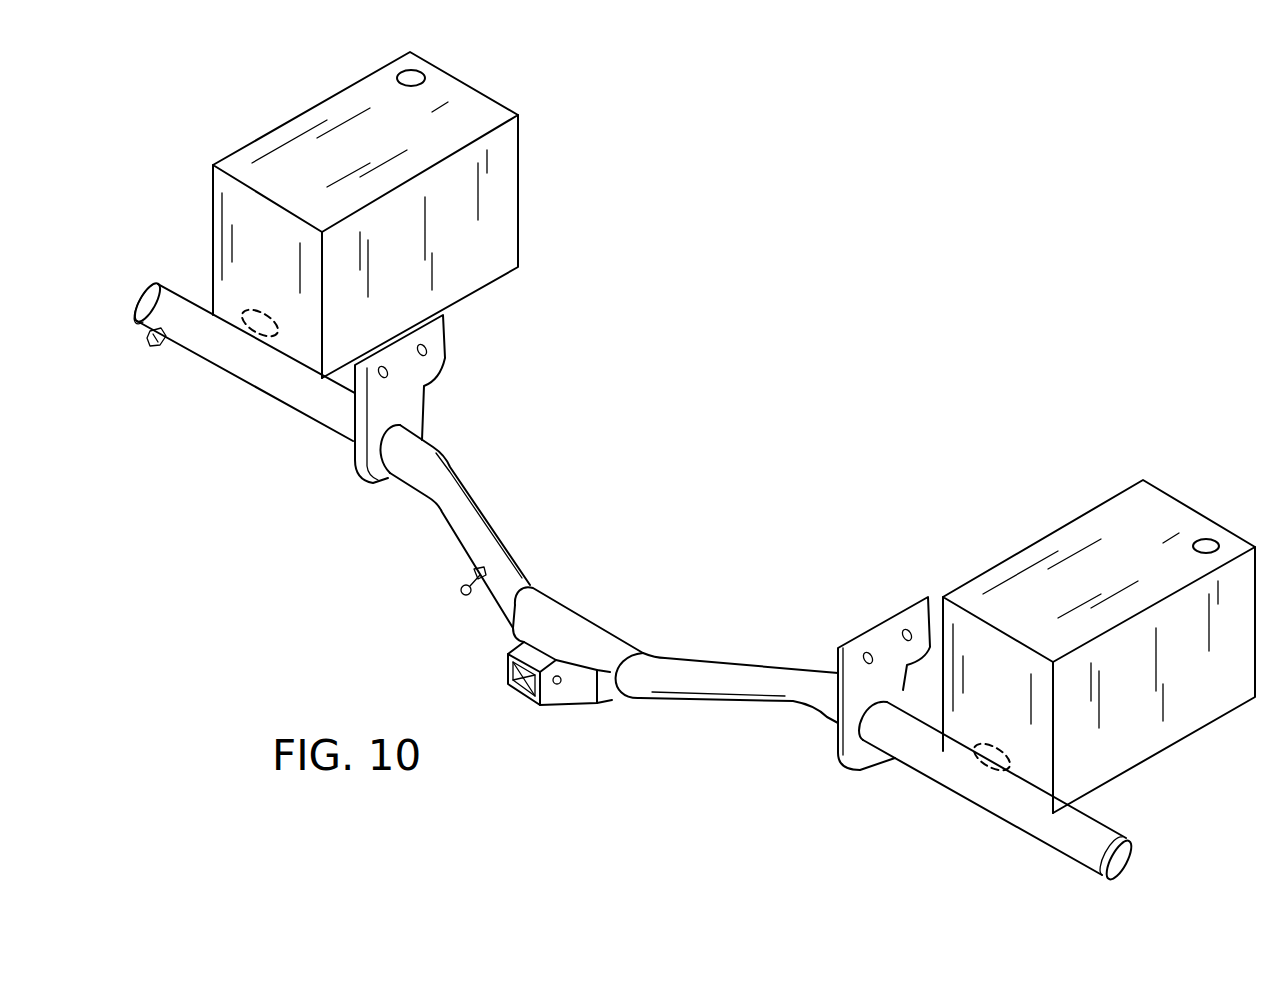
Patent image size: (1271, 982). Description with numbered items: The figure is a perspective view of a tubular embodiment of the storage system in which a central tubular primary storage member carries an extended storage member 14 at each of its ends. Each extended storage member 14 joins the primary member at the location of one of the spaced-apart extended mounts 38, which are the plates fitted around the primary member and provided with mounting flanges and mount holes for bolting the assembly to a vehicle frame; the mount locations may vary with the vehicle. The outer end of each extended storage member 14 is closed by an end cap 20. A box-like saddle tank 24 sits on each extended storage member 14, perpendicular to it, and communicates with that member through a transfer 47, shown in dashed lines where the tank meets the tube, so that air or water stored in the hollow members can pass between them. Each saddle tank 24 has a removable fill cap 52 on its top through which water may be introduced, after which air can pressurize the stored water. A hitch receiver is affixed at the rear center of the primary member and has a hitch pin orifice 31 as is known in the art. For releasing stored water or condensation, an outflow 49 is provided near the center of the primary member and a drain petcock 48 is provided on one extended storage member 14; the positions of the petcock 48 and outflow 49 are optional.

The extended storage member 14 is at (217, 367).
The end cap 20 is at (152, 284).
The saddle tank 24 is at (520, 183).
The hitch pin orifice 31 is at (560, 688).
The extended mount 38 is at (446, 348).
The transfer 47 is at (270, 337).
The petcock drain 48 is at (155, 347).
The outflow 49 is at (460, 586).
The fill cap 52 is at (413, 75).